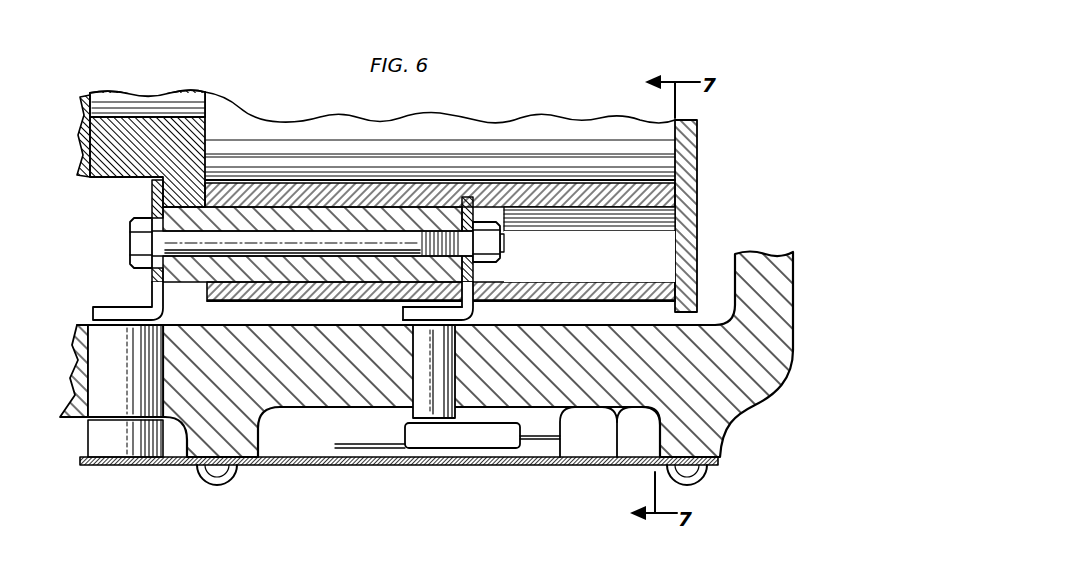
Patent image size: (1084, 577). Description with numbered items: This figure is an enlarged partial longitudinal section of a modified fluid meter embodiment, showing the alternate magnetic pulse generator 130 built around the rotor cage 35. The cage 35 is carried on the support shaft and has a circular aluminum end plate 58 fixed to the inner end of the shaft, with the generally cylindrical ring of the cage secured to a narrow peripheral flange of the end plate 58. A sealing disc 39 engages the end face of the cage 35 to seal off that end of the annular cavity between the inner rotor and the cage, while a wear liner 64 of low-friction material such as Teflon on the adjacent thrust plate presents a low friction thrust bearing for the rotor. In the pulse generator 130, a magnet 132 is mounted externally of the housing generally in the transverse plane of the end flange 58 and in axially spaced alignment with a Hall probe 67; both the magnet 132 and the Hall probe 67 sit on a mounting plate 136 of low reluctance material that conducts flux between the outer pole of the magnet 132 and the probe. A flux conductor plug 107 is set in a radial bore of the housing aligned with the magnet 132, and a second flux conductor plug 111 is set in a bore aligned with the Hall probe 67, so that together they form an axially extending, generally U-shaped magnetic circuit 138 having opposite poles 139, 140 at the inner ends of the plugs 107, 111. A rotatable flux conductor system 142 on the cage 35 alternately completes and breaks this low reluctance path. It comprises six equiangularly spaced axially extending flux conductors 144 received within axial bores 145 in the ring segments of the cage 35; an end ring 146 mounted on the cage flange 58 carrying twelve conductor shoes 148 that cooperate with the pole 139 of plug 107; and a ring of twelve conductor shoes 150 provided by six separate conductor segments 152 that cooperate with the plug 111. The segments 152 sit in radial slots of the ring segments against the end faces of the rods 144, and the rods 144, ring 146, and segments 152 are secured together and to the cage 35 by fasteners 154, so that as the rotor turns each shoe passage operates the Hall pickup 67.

The cage 35 is at (560, 176).
The sealing disc 39 is at (690, 151).
The end plate 58 is at (110, 125).
The wear liner 64 is at (78, 139).
The Hall probe 67 is at (502, 443).
The flux conductor plug 107 is at (130, 389).
The flux conductor plug 111 is at (420, 410).
The magnetic pulse generator 130 is at (78, 278).
The magnet 132 is at (98, 441).
The mounting plate 136 is at (583, 464).
The U-shaped magnetic circuit 138 is at (276, 321).
The pole 139 is at (97, 326).
The pole 140 is at (418, 326).
The flux conductor system 142 is at (126, 227).
The flux conductor 144 is at (250, 212).
The axial bore 145 is at (623, 273).
The end ring 146 is at (152, 193).
The conductor shoe 148 is at (125, 298).
The conductor shoe 150 is at (455, 307).
The conductor segment 152 is at (490, 274).
The fastener 154 is at (133, 245).